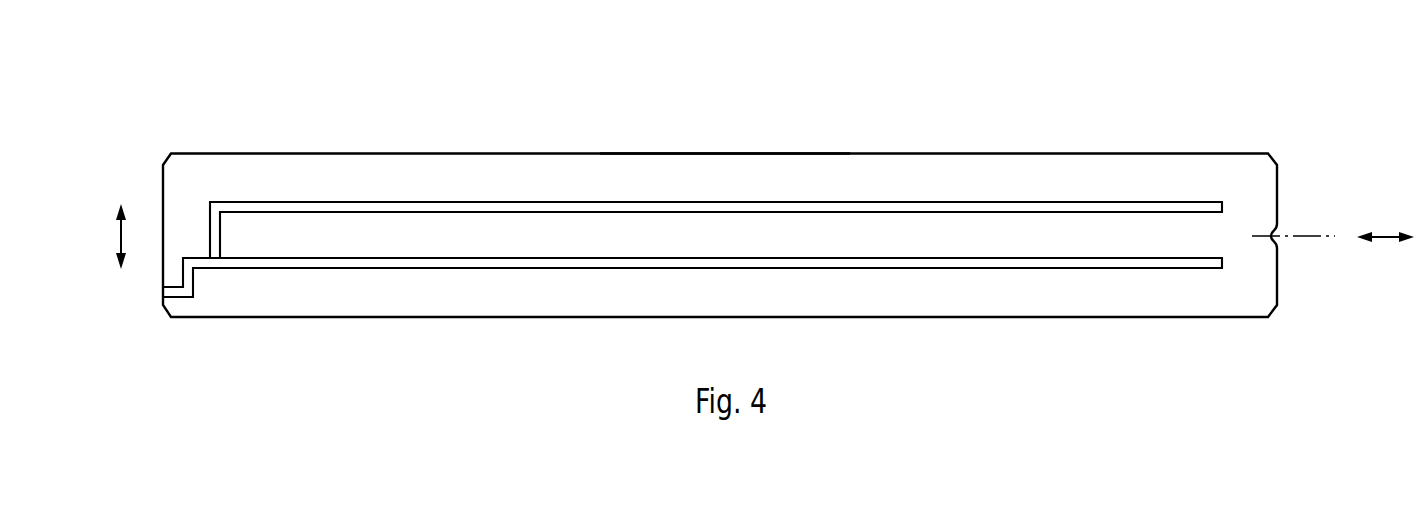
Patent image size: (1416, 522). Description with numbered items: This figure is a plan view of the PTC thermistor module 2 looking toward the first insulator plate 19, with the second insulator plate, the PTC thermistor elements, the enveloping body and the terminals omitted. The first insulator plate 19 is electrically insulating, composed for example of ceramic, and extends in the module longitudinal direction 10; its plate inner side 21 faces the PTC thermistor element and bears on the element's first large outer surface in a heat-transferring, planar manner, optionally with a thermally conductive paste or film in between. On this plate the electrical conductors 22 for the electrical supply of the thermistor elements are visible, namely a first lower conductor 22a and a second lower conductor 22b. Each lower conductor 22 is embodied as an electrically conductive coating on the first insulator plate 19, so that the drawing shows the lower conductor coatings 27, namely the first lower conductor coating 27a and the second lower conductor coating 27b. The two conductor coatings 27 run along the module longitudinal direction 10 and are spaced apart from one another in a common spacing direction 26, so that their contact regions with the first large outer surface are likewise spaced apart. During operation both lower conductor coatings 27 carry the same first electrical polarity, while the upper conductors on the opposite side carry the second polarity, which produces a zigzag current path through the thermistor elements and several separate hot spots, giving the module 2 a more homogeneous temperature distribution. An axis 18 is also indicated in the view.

The PTC thermistor module 2 is at (1312, 118).
The module longitudinal direction 10 is at (1387, 236).
The longitudinal axis 18 is at (1320, 232).
The first insulator plate 19 is at (719, 137).
The plate inner side 21 is at (785, 163).
The first electrical conductor 22 is at (692, 236).
The first lower conductor 22a is at (692, 199).
The second lower conductor 22b is at (692, 309).
The lower conductor coating 27 is at (692, 236).
The first lower conductor coating 27a is at (482, 207).
The second lower conductor coating 27b is at (487, 260).
The common spacing direction 26 is at (118, 235).